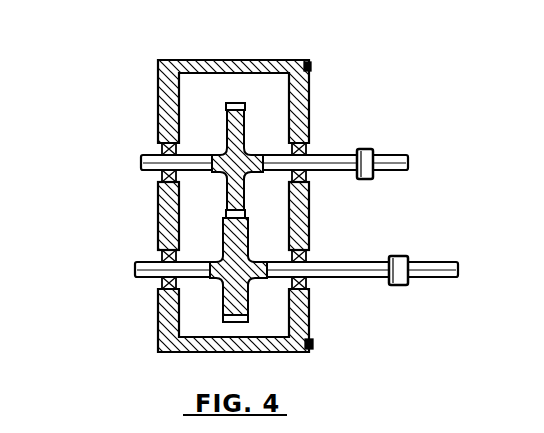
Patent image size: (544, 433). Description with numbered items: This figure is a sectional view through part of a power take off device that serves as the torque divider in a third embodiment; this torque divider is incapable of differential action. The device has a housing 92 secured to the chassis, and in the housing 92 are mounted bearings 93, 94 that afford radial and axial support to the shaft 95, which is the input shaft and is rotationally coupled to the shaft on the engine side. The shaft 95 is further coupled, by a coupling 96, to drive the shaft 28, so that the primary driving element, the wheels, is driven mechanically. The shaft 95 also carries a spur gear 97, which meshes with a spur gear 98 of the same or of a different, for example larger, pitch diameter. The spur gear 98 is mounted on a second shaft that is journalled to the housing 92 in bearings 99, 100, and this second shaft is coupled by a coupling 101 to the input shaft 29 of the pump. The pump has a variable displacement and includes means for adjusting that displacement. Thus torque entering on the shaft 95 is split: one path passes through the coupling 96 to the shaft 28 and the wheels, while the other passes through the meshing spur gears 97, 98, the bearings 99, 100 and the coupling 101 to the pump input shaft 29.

The shaft 28 is at (425, 265).
The input shaft of the pump 29 is at (400, 160).
The housing 92 is at (190, 62).
The bearing 93 is at (163, 279).
The bearing 94 is at (305, 262).
The shaft 95 is at (142, 265).
The coupling 96 is at (397, 256).
The spur gear 97 is at (249, 303).
The spur gear 98 is at (243, 186).
The bearing 99 is at (163, 149).
The bearing 100 is at (304, 153).
The coupling 101 is at (364, 150).